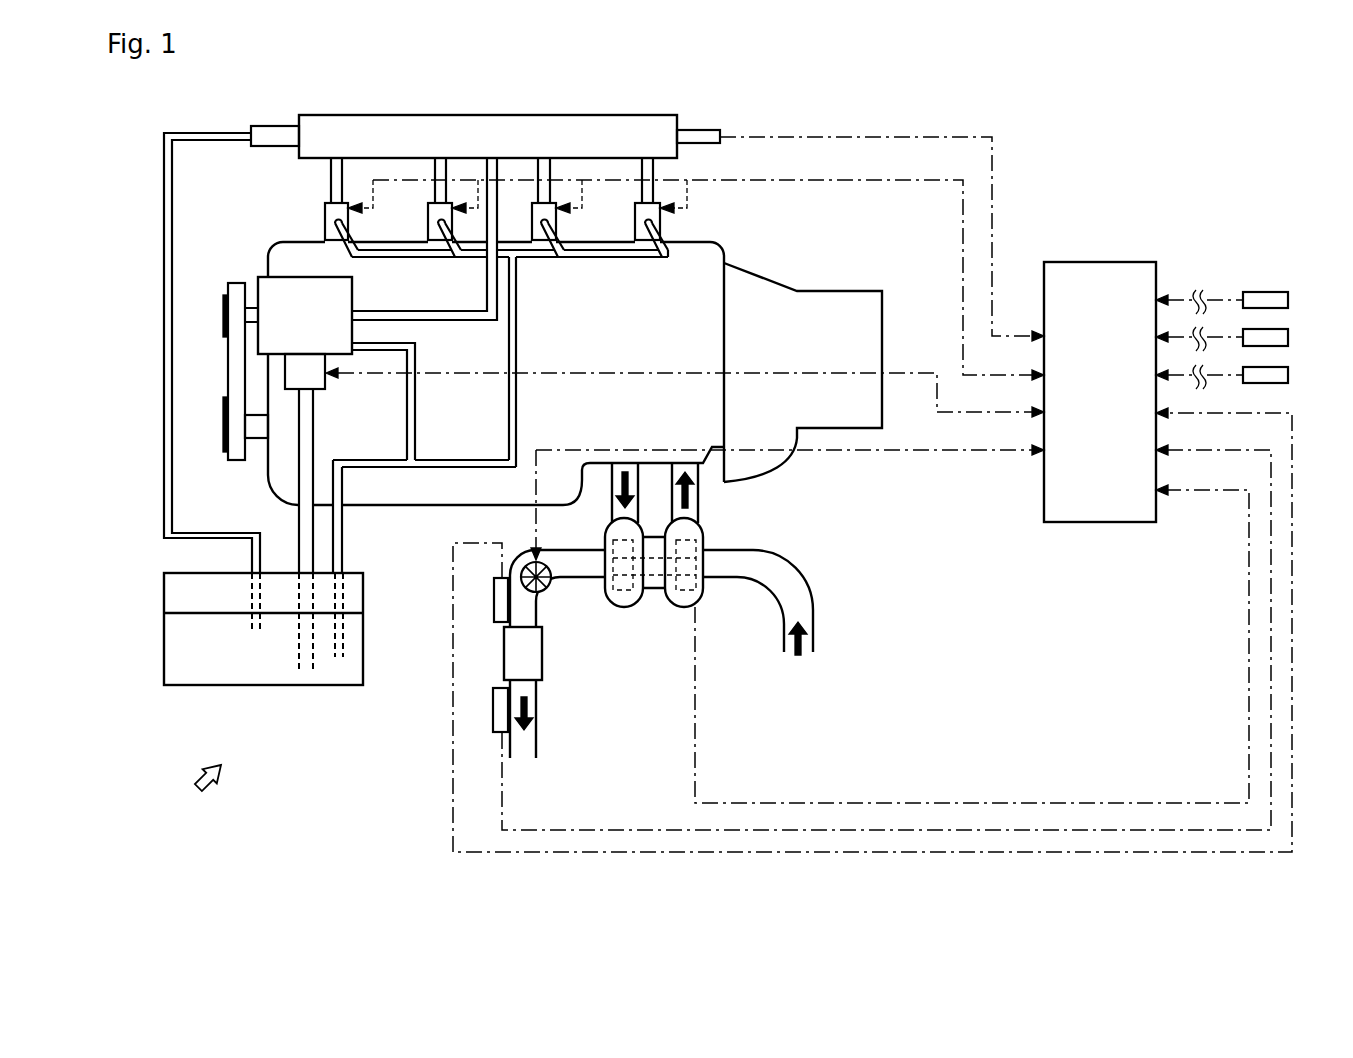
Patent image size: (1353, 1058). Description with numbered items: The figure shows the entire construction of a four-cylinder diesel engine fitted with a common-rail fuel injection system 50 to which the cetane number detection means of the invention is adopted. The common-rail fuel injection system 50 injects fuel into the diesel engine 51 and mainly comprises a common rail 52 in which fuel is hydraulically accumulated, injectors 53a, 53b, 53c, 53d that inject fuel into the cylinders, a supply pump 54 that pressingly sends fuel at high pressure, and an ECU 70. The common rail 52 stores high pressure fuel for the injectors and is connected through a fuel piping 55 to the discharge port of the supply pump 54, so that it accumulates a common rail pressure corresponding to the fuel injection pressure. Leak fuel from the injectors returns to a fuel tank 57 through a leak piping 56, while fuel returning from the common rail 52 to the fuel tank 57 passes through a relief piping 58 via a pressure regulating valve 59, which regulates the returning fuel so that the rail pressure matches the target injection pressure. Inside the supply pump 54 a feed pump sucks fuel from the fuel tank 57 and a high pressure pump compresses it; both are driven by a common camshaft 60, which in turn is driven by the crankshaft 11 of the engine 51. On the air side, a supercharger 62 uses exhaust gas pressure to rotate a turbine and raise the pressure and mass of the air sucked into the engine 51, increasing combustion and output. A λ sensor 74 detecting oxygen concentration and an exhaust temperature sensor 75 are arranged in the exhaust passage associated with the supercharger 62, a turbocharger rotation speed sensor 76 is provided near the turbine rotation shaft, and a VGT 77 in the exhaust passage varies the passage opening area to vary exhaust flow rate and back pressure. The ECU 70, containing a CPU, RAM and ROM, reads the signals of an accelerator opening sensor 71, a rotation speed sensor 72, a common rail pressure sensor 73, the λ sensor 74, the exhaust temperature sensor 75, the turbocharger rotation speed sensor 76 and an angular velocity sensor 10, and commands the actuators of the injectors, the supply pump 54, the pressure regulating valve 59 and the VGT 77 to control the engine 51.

The common-rail fuel injection system 50 is at (194, 797).
The diesel engine 51 is at (567, 427).
The common rail 52 is at (483, 120).
The injector 53a is at (325, 218).
The injector 53b is at (434, 243).
The injector 53c is at (543, 241).
The injector 53d is at (662, 232).
The supply pump 54 is at (318, 329).
The fuel piping 55 is at (460, 313).
The leak piping 56 is at (518, 348).
The fuel tank 57 is at (163, 640).
The relief piping 58 is at (202, 132).
The pressure regulating valve 59 is at (275, 130).
The camshaft 60 is at (251, 302).
The crankshaft 11 is at (258, 440).
The supercharger 62 is at (620, 608).
The turbocharger rotation speed sensor 76 is at (705, 602).
The VGT 77 is at (542, 597).
The λ sensor 74 is at (493, 620).
The exhaust temperature sensor 75 is at (492, 733).
The ECU 70 is at (1116, 404).
The accelerator opening sensor 71 is at (1288, 295).
The rotation speed sensor 72 is at (1288, 335).
The angular velocity sensor 10 is at (1288, 373).
The common rail pressure sensor 73 is at (722, 131).